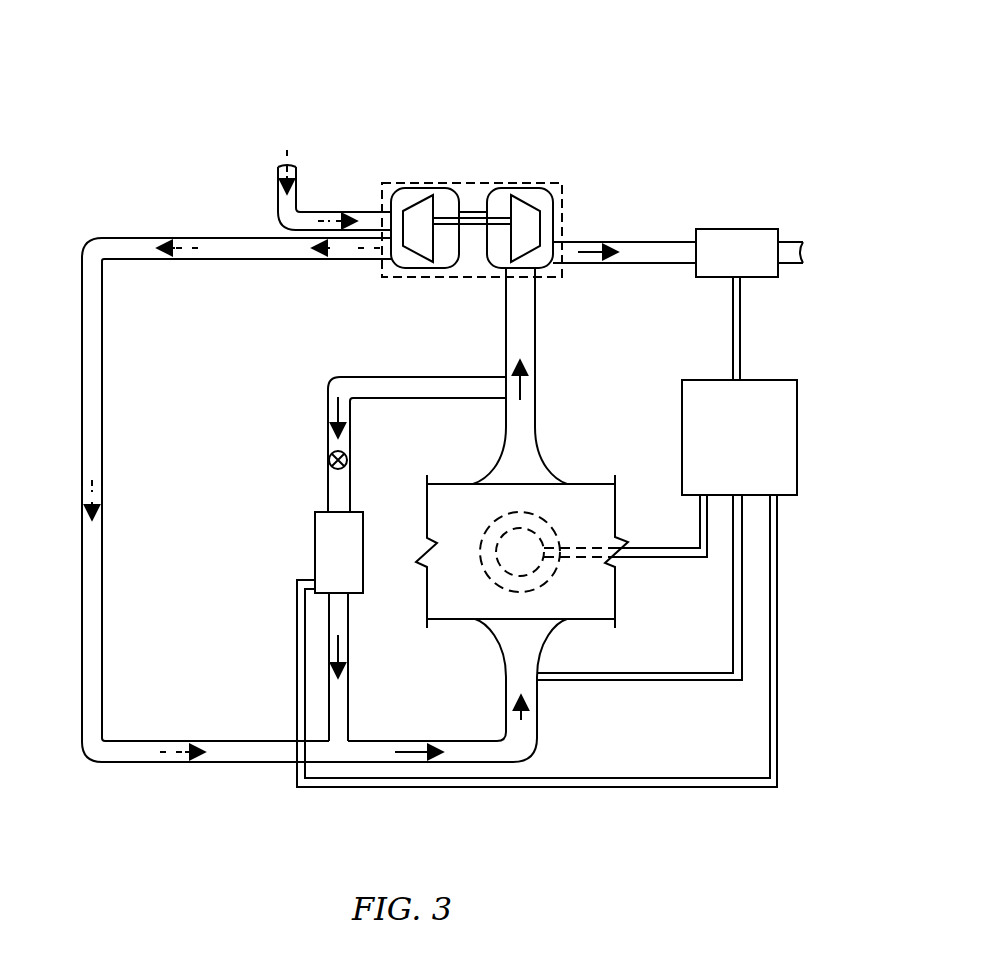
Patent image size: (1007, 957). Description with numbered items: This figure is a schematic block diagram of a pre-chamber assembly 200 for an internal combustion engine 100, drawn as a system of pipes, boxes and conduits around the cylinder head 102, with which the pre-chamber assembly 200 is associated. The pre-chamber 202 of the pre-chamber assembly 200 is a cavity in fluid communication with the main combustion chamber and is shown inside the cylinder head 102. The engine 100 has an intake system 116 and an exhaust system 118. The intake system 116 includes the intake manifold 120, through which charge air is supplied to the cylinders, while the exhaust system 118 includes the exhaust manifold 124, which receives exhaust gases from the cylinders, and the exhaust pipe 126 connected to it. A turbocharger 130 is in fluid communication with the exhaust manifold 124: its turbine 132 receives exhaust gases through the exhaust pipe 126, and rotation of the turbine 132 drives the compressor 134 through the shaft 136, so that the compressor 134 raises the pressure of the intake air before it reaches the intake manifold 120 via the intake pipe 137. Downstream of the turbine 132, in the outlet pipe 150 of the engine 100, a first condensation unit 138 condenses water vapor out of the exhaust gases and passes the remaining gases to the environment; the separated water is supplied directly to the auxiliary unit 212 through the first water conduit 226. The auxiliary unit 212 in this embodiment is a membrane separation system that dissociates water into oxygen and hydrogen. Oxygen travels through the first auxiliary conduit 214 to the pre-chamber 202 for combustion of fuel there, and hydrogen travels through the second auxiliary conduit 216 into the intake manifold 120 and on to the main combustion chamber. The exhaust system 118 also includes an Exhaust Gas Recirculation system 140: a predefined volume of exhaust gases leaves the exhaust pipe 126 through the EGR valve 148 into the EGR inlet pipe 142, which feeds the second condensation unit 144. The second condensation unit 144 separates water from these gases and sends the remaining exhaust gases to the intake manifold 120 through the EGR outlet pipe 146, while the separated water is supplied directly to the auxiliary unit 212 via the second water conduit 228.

The internal combustion engine 100 is at (687, 68).
The cylinder head 102 is at (522, 534).
The intake system 116 is at (580, 634).
The exhaust system 118 is at (580, 467).
The intake manifold 120 is at (495, 632).
The exhaust manifold 124 is at (545, 470).
The exhaust pipe 126 is at (527, 385).
The turbocharger 130 is at (492, 174).
The turbine 132 is at (545, 188).
The compressor 134 is at (416, 188).
The shaft 136 is at (462, 190).
The intake pipe 137 is at (82, 332).
The first condensation unit 138 is at (749, 253).
The Exhaust Gas Recirculation (EGR) system 140 is at (286, 442).
The EGR inlet pipe 142 is at (395, 376).
The second condensation unit 144 is at (339, 552).
The EGR outlet pipe 146 is at (350, 698).
The EGR valve 148 is at (332, 468).
The outlet pipe 150 is at (648, 240).
The pre-chamber assembly 200 is at (775, 332).
The pre-chamber 202 is at (510, 548).
The auxiliary unit 212 is at (739, 437).
The first auxiliary conduit 214 is at (655, 548).
The second auxiliary conduit 216 is at (673, 681).
The first water conduit 226 is at (733, 312).
The second water conduit 228 is at (297, 657).